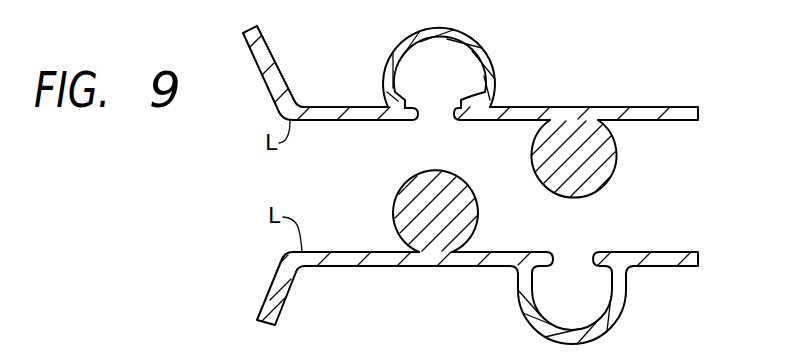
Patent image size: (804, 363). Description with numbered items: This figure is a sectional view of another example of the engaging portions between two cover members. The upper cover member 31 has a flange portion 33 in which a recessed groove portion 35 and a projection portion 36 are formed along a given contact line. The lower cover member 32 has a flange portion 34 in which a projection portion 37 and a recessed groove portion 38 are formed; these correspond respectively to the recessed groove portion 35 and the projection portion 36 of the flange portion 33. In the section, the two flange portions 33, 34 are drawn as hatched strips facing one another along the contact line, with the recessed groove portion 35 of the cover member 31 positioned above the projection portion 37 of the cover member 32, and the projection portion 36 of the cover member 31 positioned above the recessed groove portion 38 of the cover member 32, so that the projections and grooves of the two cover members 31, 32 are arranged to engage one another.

The cover member 31 is at (284, 75).
The cover member 32 is at (288, 288).
The flange portion 33 is at (632, 106).
The flange portion 34 is at (643, 252).
The recessed groove portion 35 is at (489, 63).
The projection portion 36 is at (587, 162).
The projection portion 37 is at (423, 197).
The recessed groove portion 38 is at (625, 307).